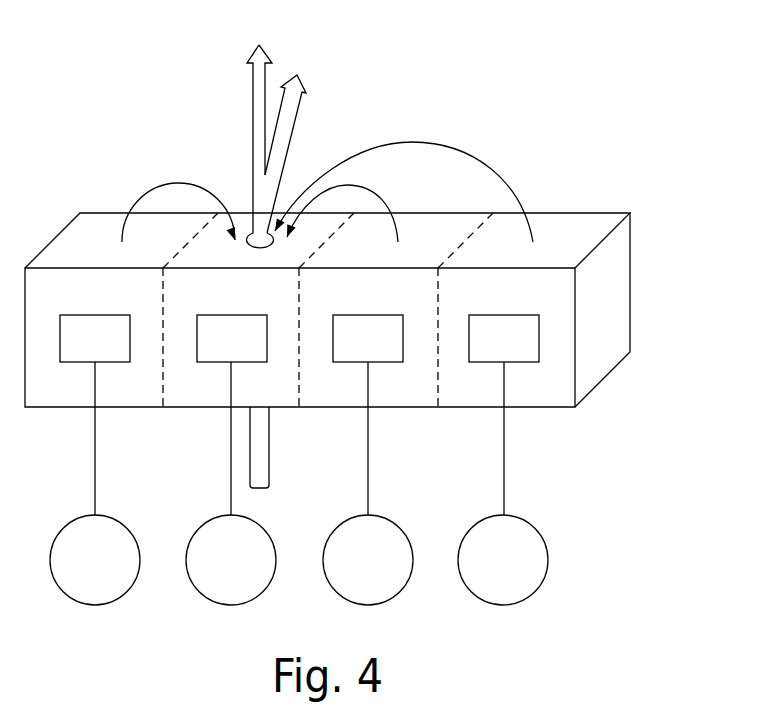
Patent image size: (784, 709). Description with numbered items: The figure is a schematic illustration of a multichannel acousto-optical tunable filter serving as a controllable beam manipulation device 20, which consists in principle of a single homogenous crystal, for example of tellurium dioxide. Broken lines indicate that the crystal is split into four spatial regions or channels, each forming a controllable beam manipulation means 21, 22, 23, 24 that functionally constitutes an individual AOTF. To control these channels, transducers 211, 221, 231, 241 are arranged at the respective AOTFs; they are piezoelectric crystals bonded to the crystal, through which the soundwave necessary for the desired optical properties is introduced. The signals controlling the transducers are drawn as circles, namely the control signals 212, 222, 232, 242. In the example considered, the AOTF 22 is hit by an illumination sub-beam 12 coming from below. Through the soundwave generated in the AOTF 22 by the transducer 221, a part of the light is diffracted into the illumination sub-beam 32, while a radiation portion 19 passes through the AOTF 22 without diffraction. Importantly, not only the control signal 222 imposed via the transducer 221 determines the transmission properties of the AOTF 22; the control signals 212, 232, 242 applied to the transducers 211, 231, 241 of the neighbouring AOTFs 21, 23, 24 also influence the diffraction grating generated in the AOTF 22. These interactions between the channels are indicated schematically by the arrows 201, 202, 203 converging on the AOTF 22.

The controllable beam manipulation device 20 is at (648, 130).
The controllable beam manipulation means 21 is at (64, 299).
The controllable beam manipulation means 22 is at (201, 299).
The controllable beam manipulation means 23 is at (337, 299).
The controllable beam manipulation means 24 is at (475, 299).
The transducer 211 is at (95, 415).
The transducer 221 is at (232, 415).
The transducer 231 is at (368, 415).
The transducer 241 is at (504, 415).
The control signal 212 is at (95, 560).
The control signal 222 is at (231, 560).
The control signal 232 is at (368, 560).
The control signal 242 is at (503, 560).
The illumination sub-beam 12 is at (262, 447).
The radiation portion 19 is at (255, 80).
The illumination sub-beam 32 is at (290, 110).
The arrow 201 is at (178, 183).
The arrow 202 is at (380, 193).
The arrow 203 is at (412, 142).